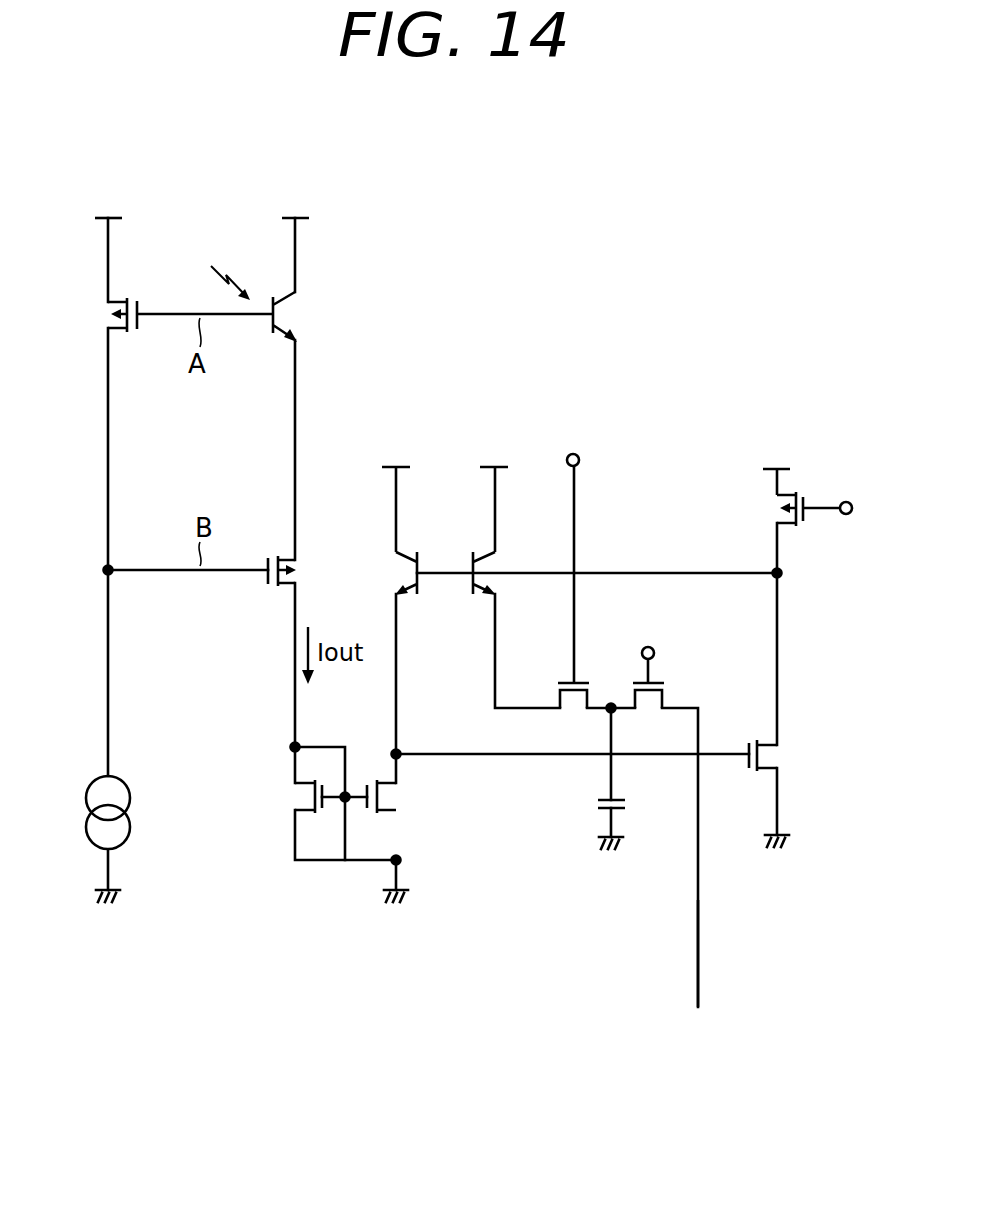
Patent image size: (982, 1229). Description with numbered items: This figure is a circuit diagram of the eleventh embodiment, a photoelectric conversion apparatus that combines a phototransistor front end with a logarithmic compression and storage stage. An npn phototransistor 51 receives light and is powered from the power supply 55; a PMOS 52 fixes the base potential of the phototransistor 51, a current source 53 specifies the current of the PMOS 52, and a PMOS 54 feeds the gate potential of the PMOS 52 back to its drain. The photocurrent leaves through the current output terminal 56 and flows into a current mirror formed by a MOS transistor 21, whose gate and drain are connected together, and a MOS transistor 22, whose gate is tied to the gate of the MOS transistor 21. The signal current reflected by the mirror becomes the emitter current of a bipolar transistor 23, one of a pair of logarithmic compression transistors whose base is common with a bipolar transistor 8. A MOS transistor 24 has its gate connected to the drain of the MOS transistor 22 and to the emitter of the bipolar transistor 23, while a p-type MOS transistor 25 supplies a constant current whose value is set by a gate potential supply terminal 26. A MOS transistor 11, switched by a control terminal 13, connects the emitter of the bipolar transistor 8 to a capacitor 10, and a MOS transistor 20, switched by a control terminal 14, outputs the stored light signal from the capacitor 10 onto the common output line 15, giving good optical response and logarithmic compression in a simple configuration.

The power supply 55 is at (123, 210).
The PMOS 52 is at (108, 305).
The npn phototransistor 51 is at (297, 313).
The PMOS 54 is at (297, 563).
The current source 53 is at (95, 782).
The current output terminal 56 is at (276, 745).
The MOS transistor 21 is at (295, 796).
The MOS transistor 22 is at (398, 797).
The bipolar transistor 23 is at (419, 552).
The bipolar transistor 8 is at (497, 562).
The control terminal 13 is at (574, 453).
The MOS transistor 11 is at (562, 682).
The MOS transistor 20 is at (640, 682).
The control terminal 14 is at (656, 651).
The capacitor 10 is at (594, 802).
The common output line 15 is at (700, 925).
The MOS transistor 24 is at (779, 755).
The p-type MOS transistor 25 is at (777, 506).
The gate potential supply terminal 26 is at (847, 502).